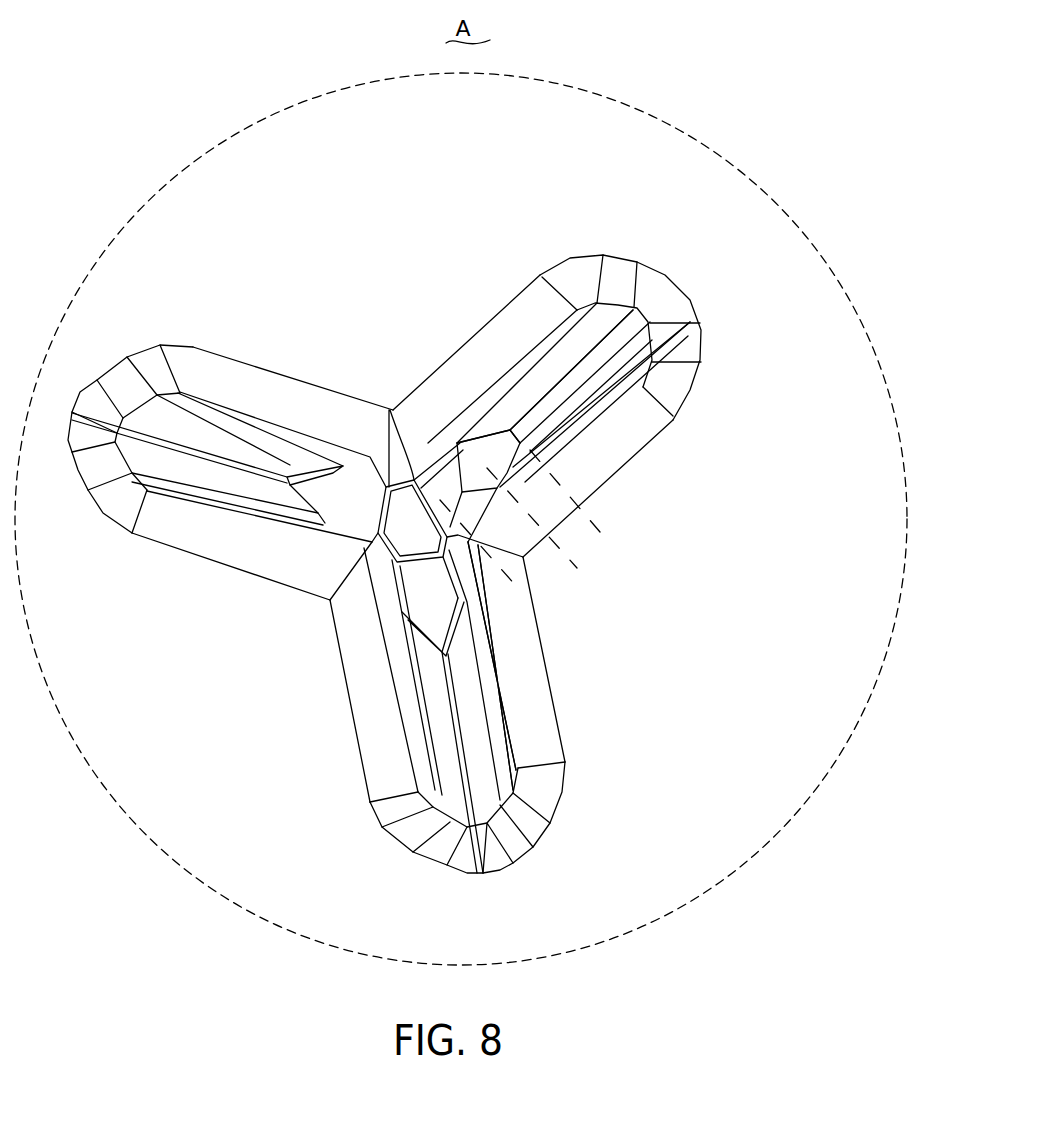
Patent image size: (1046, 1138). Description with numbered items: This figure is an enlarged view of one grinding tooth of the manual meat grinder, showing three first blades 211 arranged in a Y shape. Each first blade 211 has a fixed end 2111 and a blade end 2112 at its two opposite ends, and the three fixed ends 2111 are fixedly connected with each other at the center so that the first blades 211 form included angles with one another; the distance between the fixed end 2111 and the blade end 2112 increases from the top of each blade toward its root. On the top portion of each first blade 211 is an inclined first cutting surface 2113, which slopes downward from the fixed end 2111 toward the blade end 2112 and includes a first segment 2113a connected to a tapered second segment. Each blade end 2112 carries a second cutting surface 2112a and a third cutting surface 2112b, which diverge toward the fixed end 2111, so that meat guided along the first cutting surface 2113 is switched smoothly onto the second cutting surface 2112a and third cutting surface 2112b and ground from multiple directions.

The first blade 211 is at (636, 313).
The fixed end 2111 is at (397, 413).
The blade end 2112 is at (500, 748).
The second cutting surface 2112a is at (588, 408).
The third cutting surface 2112b is at (570, 355).
The first cutting surface 2113 is at (685, 538).
The first segment 2113a is at (508, 465).